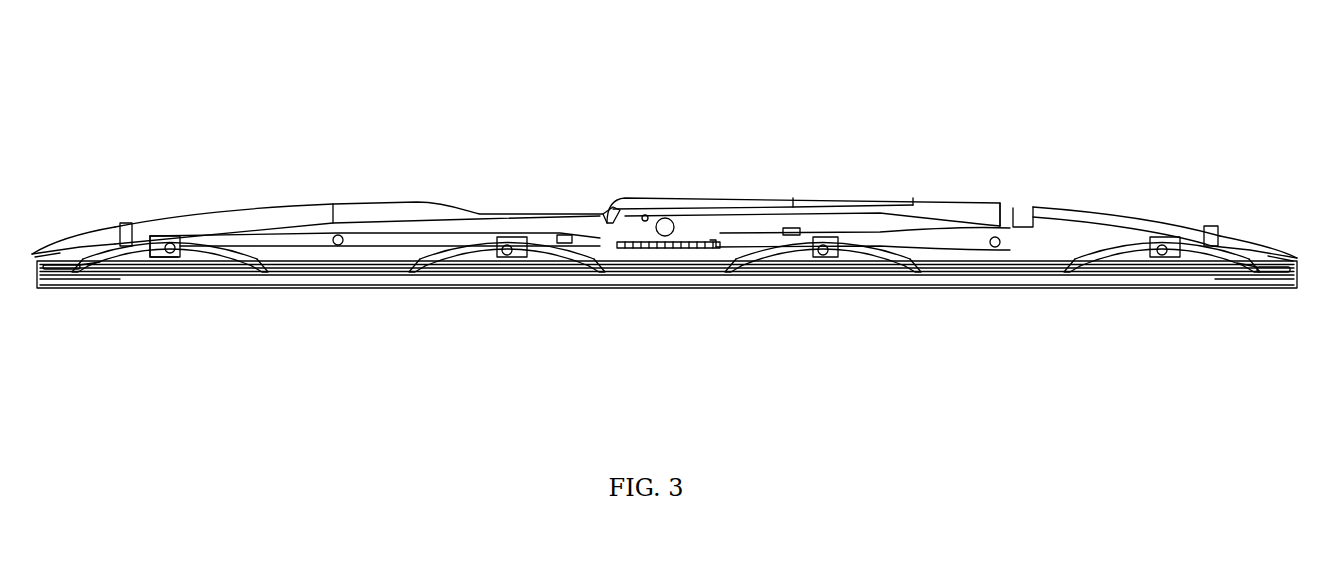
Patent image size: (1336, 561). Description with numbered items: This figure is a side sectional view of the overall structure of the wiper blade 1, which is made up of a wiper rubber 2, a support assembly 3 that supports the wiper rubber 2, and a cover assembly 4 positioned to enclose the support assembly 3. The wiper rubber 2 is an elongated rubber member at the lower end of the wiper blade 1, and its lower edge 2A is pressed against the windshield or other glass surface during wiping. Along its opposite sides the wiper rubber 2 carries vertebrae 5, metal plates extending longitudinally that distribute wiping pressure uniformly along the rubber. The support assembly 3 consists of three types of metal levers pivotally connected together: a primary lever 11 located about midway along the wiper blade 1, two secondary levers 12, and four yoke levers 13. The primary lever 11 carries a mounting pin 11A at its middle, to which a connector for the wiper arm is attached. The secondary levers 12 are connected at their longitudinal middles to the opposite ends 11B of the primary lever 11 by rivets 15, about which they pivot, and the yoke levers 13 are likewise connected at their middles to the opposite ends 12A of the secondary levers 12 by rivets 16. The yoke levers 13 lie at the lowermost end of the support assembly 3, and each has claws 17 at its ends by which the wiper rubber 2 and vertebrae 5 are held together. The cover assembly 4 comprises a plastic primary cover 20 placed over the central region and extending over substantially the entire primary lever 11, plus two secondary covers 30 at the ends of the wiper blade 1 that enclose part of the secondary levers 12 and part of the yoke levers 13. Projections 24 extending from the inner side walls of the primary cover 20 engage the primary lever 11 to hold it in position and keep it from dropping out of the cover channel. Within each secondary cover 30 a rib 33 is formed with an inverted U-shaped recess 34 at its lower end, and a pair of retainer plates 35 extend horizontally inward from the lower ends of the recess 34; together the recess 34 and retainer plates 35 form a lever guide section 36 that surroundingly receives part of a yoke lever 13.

The wiper blade 1 is at (817, 112).
The wiper rubber 2 is at (698, 289).
The lower edge 2A is at (673, 289).
The support assembly 3 is at (656, 258).
The cover assembly 4 is at (692, 182).
The vertebrae 5 is at (373, 289).
The primary lever 11 is at (915, 207).
The mounting pin 11A is at (660, 218).
The opposite ends of the primary lever 11B is at (333, 203).
The secondary lever 12 is at (298, 289).
The opposite ends of the secondary levers 12A is at (170, 222).
The yoke lever 13 is at (218, 289).
The rivet 15 is at (335, 289).
The rivet 16 is at (170, 289).
The claw 17 is at (73, 289).
The primary cover 20 is at (870, 198).
The projection 24 is at (557, 234).
The secondary cover 30 is at (237, 201).
The rib 33 is at (122, 222).
The recess 34 is at (112, 246).
The retainer plate 35 is at (125, 289).
The lever guide section 36 is at (138, 289).